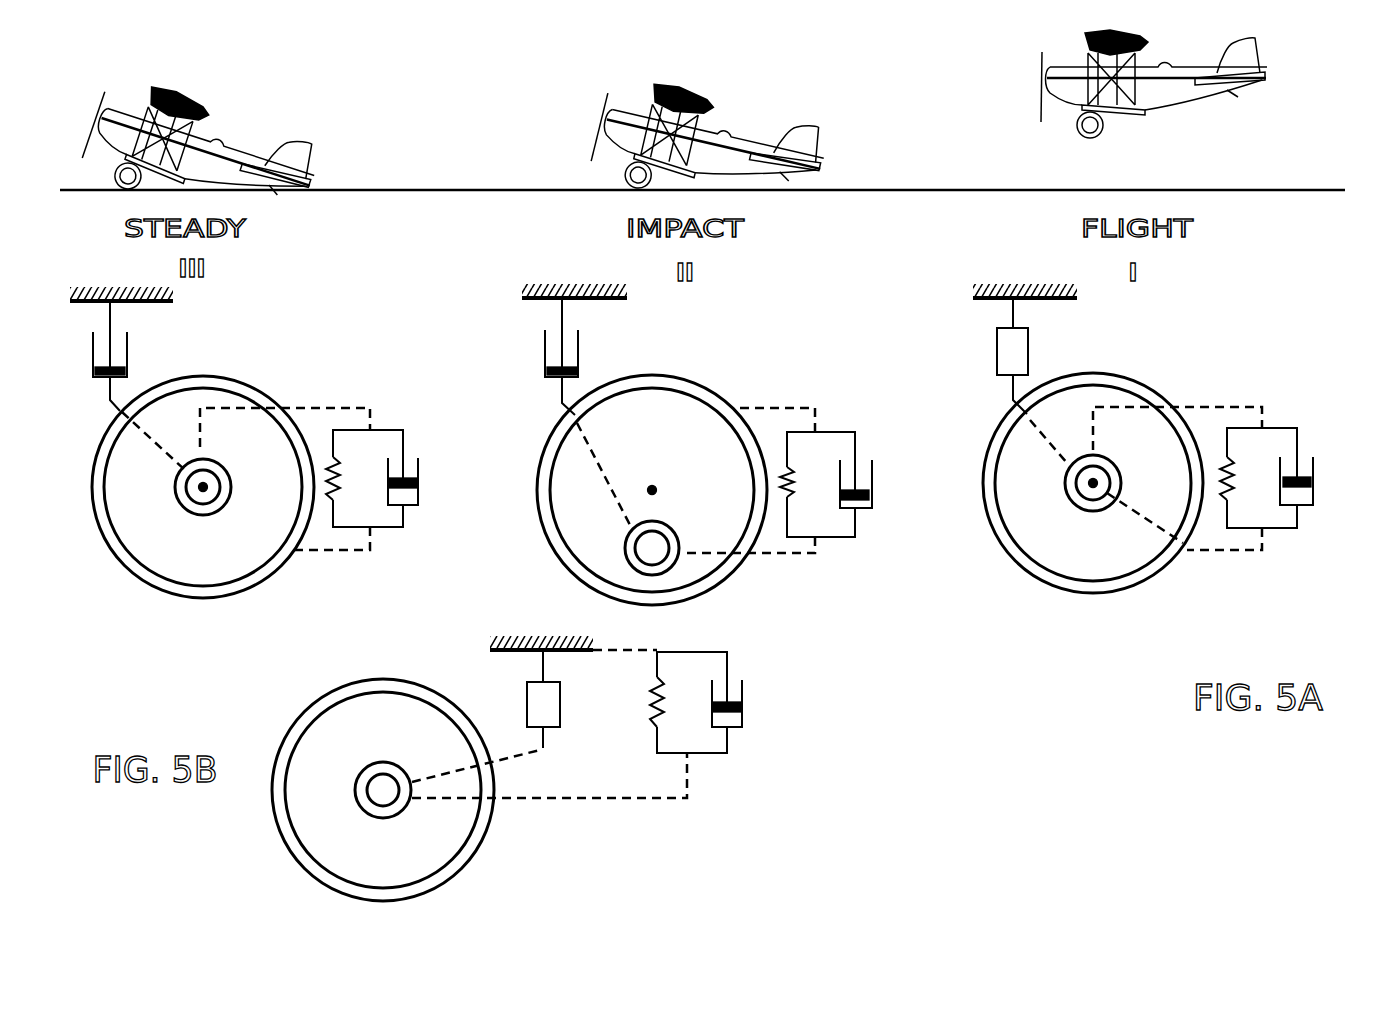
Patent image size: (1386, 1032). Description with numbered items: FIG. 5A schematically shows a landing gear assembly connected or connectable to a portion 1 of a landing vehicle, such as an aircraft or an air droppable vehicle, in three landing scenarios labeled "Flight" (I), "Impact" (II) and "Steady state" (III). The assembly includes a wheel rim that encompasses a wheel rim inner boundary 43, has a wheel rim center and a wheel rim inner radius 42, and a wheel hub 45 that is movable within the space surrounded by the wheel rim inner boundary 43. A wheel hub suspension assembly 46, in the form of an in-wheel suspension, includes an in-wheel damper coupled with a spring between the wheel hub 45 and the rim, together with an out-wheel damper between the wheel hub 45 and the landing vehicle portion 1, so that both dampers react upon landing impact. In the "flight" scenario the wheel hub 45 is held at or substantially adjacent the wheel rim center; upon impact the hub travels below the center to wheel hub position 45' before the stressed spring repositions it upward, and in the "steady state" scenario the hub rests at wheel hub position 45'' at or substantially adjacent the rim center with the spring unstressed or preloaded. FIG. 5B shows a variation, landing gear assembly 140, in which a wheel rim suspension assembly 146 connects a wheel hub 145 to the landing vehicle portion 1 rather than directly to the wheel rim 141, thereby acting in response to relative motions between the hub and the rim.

In FIG. 5B, the portion of a landing vehicle 1 is at (560, 650).
In FIG. 5A, the wheel rim inner radius 42 is at (1143, 510).
In FIG. 5A, the wheel rim inner boundary 43 is at (1102, 577).
In FIG. 5A, the wheel hub 45 is at (1138, 438).
In FIG. 5A, the wheel hub position 45' is at (701, 568).
In FIG. 5A, the wheel hub position 45'' is at (249, 440).
In FIG. 5A, the wheel hub suspension assembly 46 is at (1232, 383).
In FIG. 5B, the landing gear assembly 140 is at (515, 838).
In FIG. 5B, the wheel rim 141 is at (297, 858).
In FIG. 5B, the wheel hub 145 is at (403, 767).
In FIG. 5B, the wheel rim suspension assembly 146 is at (750, 757).